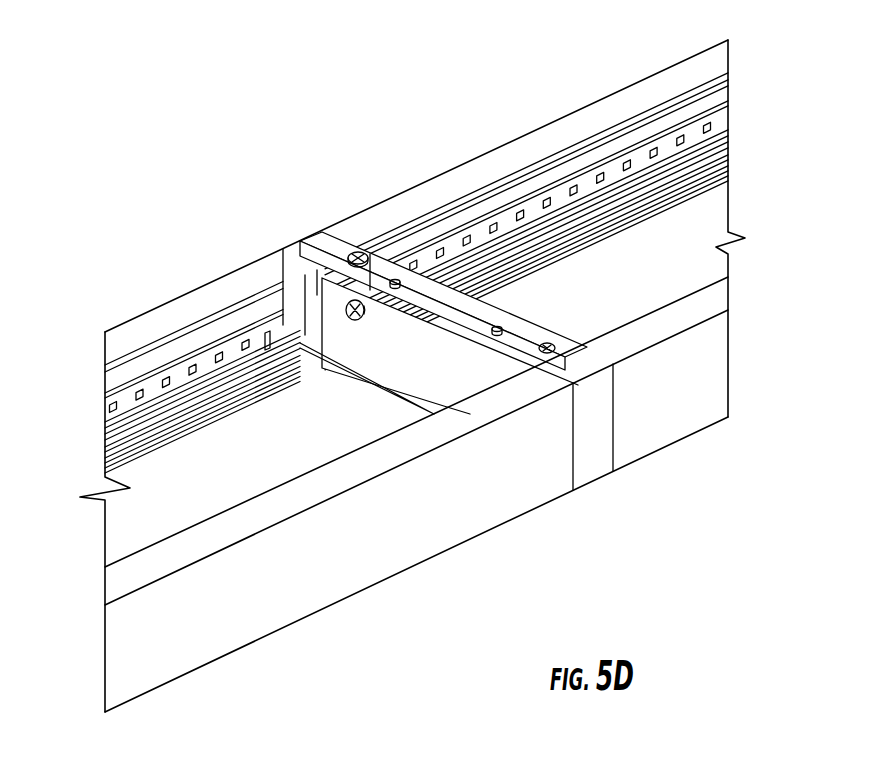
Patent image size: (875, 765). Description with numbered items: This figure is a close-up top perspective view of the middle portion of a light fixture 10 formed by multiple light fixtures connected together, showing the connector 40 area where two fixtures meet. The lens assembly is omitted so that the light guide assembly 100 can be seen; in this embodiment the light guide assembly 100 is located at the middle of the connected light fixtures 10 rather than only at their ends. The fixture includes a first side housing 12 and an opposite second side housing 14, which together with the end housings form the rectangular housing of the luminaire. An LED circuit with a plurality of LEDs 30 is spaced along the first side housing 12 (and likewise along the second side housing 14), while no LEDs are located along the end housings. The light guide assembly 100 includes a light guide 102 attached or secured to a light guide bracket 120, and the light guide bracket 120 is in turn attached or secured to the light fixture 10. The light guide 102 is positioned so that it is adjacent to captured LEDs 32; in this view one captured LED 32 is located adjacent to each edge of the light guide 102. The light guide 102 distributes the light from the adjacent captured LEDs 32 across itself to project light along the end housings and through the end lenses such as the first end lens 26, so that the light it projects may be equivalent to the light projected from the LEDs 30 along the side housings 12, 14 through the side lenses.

The light fixture 10 is at (172, 126).
The first side housing 12 is at (258, 273).
The second side housing 14 is at (712, 380).
The first end lens 26 is at (388, 358).
The LEDs 30 is at (220, 352).
The captured LEDs 32 is at (268, 335).
The connector 40 is at (563, 360).
The light guide assembly 100 is at (348, 385).
The light guide 102 is at (298, 337).
The light guide bracket 120 is at (458, 362).